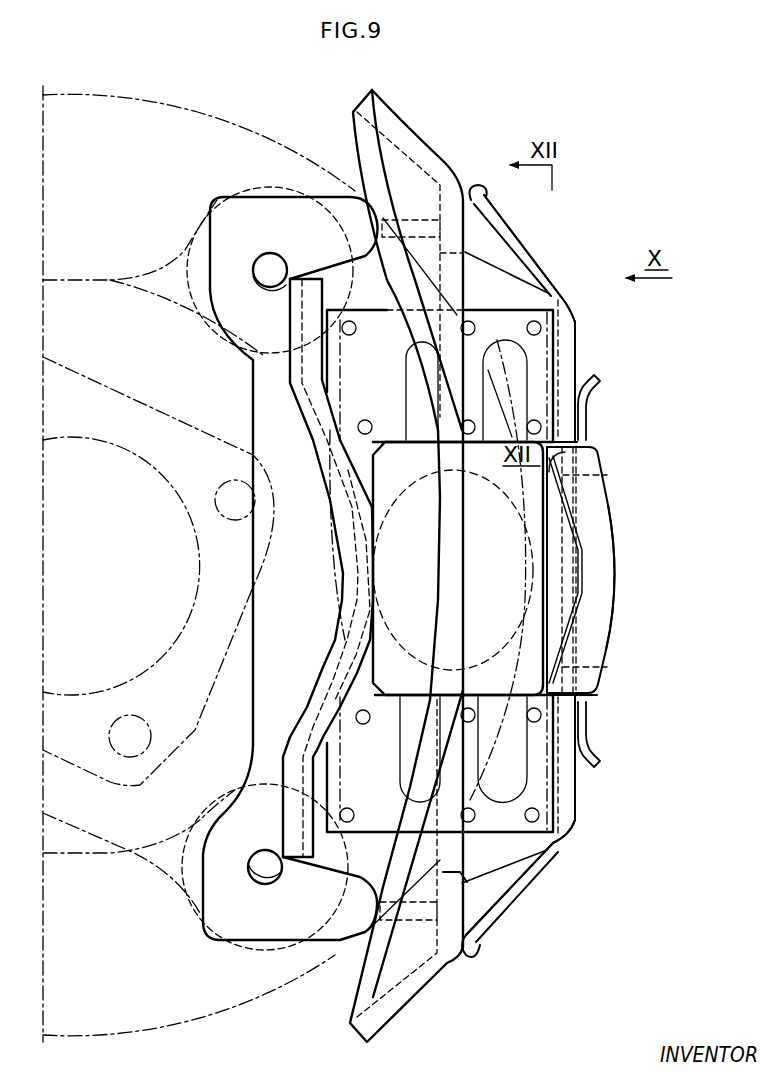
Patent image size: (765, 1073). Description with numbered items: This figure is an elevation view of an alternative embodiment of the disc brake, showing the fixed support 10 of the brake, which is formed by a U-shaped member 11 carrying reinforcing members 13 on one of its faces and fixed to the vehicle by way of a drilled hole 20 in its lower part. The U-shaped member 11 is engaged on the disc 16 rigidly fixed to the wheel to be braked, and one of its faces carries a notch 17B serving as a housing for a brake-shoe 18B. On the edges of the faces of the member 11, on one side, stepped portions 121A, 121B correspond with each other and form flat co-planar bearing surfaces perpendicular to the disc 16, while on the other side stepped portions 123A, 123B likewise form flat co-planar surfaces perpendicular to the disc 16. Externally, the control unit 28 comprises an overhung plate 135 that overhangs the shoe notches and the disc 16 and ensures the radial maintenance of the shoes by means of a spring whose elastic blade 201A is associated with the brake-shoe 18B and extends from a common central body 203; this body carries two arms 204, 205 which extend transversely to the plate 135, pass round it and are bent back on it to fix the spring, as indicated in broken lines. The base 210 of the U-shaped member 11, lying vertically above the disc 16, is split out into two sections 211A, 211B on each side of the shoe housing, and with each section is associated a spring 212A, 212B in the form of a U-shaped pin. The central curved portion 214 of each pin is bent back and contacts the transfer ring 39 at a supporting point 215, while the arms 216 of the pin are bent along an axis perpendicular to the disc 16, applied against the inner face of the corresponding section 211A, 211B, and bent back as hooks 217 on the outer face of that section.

The fixed support 10 is at (248, 709).
The U-shaped member 11 is at (473, 882).
The reinforcing member 13 is at (388, 379).
The disc 16 is at (275, 143).
The notch 17B is at (473, 797).
The brake-shoe 18B is at (512, 582).
The drilled hole 20 is at (608, 579).
The control unit 28 is at (609, 492).
The transfer ring 39 is at (433, 985).
The stepped portion 121A is at (508, 873).
The stepped portion 121B is at (508, 873).
The stepped portion 123A is at (458, 248).
The stepped portion 123B is at (458, 248).
The overhung plate 135 is at (610, 573).
The elastic blade 201A is at (568, 608).
The central body 203 is at (568, 500).
The arm 204 is at (600, 672).
The arm 205 is at (580, 470).
The base 210 is at (528, 558).
The section 211A is at (578, 785).
The section 211B is at (578, 330).
The spring 212A is at (516, 889).
The spring 212B is at (494, 215).
The central curved portion 214 is at (481, 186).
The supporting point 215 is at (448, 193).
The arm 216 is at (530, 264).
The hook 217 is at (596, 390).